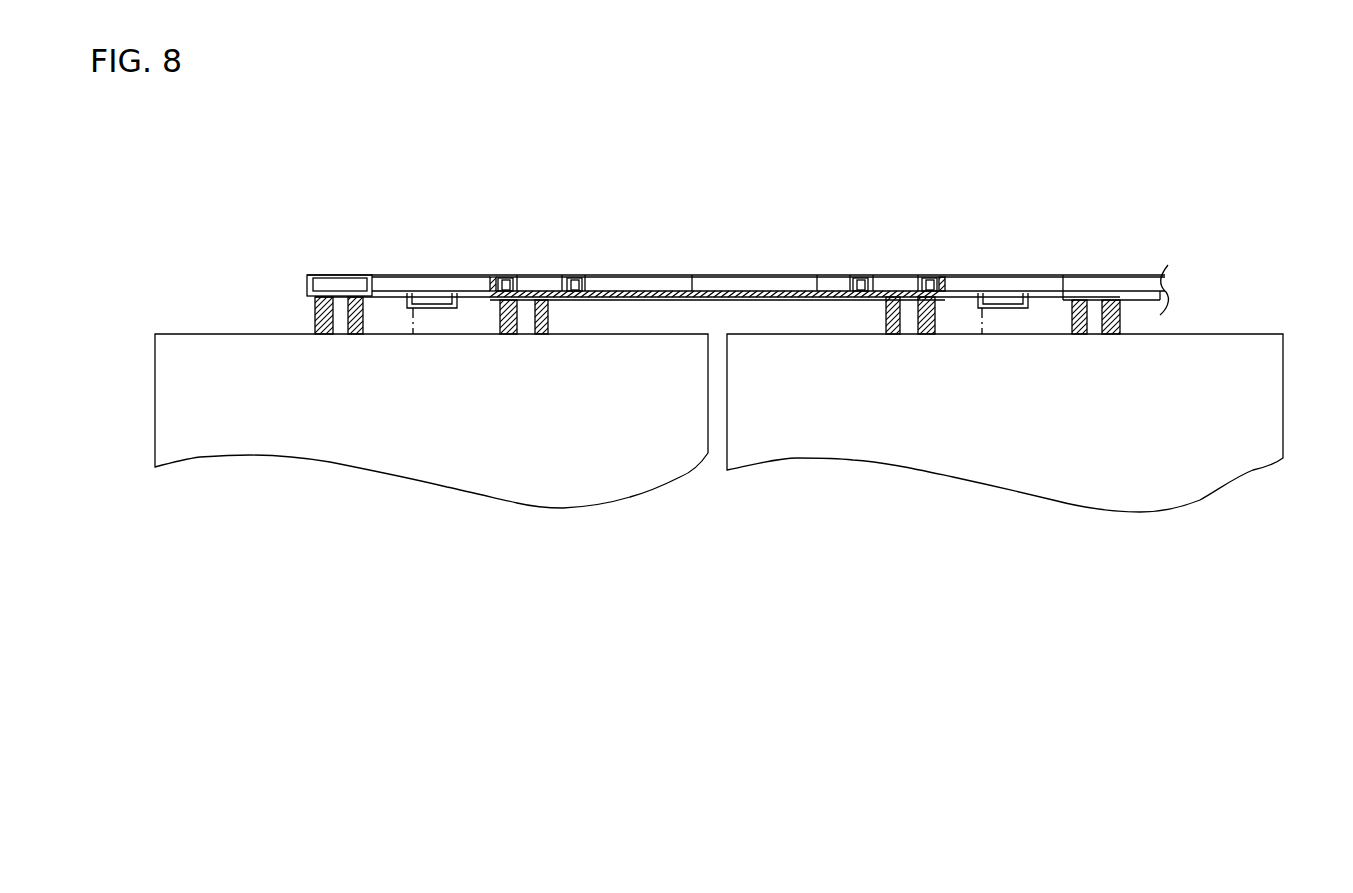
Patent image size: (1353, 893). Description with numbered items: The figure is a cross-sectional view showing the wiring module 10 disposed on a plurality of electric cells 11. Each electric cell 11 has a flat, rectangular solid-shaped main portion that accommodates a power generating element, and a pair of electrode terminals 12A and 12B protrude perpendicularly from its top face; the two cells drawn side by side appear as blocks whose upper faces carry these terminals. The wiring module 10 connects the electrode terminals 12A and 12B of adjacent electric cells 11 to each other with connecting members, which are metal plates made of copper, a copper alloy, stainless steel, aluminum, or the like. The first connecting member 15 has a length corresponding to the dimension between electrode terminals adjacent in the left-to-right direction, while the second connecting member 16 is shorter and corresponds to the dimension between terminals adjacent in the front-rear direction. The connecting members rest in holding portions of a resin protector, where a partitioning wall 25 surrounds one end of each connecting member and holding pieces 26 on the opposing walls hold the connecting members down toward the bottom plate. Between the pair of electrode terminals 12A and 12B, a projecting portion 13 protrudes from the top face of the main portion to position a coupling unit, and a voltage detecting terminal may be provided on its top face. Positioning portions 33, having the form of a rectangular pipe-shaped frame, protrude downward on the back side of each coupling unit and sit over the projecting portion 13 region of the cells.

The wiring module 10 is at (894, 176).
The electric cell 11 is at (155, 408).
The electrode terminal 12A is at (313, 313).
The electrode terminal 12B is at (550, 305).
The projecting portion 13 is at (458, 300).
The first connecting member 15 is at (638, 291).
The second connecting member 16 is at (322, 276).
The partitioning wall 25 is at (738, 291).
The holding piece 26 is at (505, 278).
The positioning portion 33 is at (396, 293).